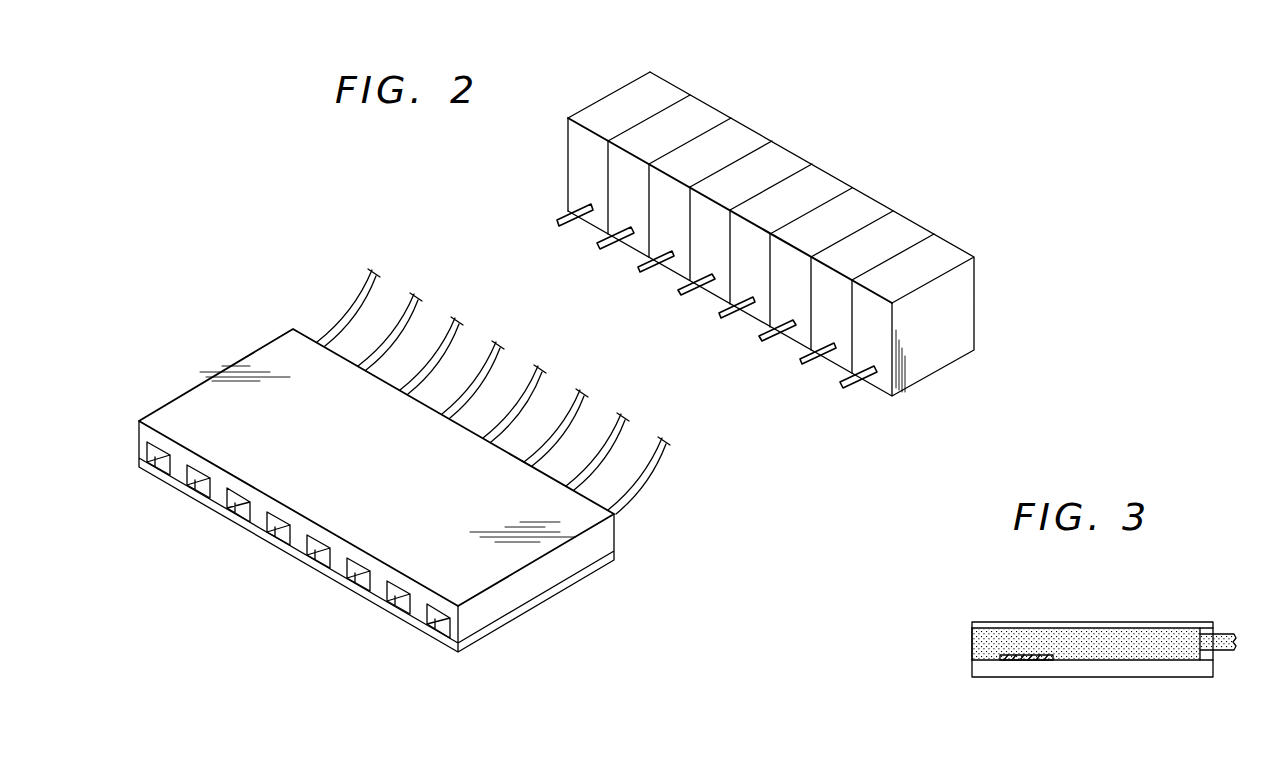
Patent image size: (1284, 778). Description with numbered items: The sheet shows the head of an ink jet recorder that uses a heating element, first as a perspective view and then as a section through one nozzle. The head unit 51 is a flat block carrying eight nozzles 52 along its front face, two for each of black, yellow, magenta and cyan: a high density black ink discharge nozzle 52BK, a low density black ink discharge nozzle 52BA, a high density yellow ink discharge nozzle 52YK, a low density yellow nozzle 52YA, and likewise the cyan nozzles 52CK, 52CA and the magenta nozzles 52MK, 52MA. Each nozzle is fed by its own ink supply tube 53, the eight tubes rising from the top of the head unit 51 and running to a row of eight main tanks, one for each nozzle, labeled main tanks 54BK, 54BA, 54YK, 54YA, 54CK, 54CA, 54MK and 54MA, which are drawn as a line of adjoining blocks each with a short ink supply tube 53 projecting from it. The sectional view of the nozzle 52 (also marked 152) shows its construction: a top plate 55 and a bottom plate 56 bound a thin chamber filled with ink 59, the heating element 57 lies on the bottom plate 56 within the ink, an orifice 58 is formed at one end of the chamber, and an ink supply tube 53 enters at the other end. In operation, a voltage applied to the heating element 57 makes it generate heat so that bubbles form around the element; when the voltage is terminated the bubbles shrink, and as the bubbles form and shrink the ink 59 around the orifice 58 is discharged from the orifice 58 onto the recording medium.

In FIG. 2, the head unit 51 is at (527, 590).
In FIG. 2, the high density black ink discharge nozzle 52BK is at (158, 460).
In FIG. 2, the low density black ink discharge nozzle 52BA is at (198, 483).
In FIG. 2, the high density yellow ink discharge nozzle 52YK is at (238, 506).
In FIG. 2, the low density yellow ink discharge nozzle 52YA is at (278, 529).
In FIG. 2, the high density cyan ink discharge nozzle 52CK is at (318, 552).
In FIG. 2, the low density cyan ink discharge nozzle 52CA is at (358, 575).
In FIG. 2, the high density magenta ink discharge nozzle 52MK is at (398, 598).
In FIG. 2, the low density magenta ink discharge nozzle 52MA is at (438, 621).
In FIG. 2, the ink supply tube 53 is at (402, 305).
In FIG. 3, the ink supply tube 53 is at (1228, 650).
In FIG. 2, the main tank 54BK is at (658, 88).
In FIG. 2, the main tank 54BA is at (700, 111).
In FIG. 2, the main tank 54YK is at (741, 134).
In FIG. 2, the main tank 54YA is at (781, 157).
In FIG. 2, the main tank 54CK is at (822, 180).
In FIG. 2, the main tank 54CA is at (862, 203).
In FIG. 2, the main tank 54MK is at (903, 226).
In FIG. 2, the main tank 54MA is at (943, 249).
In FIG. 3, the nozzle 52 is at (1092, 623).
In FIG. 3, the recess 152 is at (1110, 622).
In FIG. 3, the top plate 55 is at (1182, 626).
In FIG. 3, the bottom plate 56 is at (1072, 664).
In FIG. 3, the heating element 57 is at (1020, 654).
In FIG. 3, the orifice 58 is at (972, 640).
In FIG. 3, the ink 59 is at (1076, 640).